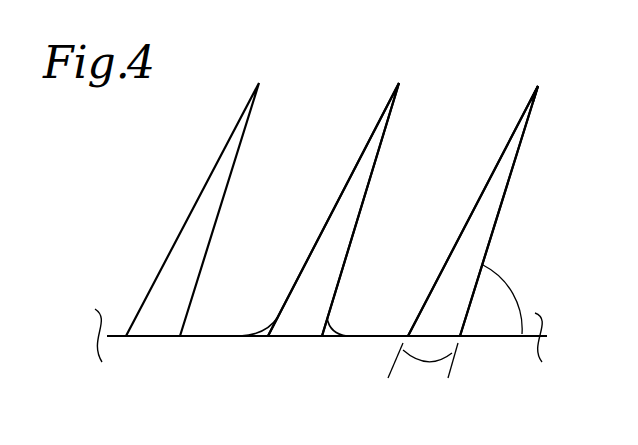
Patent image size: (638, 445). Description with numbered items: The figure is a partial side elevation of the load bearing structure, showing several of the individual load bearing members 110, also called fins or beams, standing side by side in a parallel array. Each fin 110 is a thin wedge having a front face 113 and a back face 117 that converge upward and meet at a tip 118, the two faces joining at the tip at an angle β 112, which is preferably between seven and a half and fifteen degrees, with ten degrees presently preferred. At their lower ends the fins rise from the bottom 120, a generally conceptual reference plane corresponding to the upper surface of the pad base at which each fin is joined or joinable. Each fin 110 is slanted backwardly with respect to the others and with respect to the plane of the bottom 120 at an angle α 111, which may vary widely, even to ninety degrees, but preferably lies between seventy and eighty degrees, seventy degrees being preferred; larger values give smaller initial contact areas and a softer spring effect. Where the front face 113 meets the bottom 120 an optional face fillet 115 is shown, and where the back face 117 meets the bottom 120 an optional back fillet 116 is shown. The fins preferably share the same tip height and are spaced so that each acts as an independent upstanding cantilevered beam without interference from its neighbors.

The load bearing members 110 is at (320, 195).
The angle α 111 is at (526, 293).
The angle β 112 is at (423, 372).
The front face 113 is at (506, 147).
The face fillet 115 is at (267, 325).
The back fillet 116 is at (332, 326).
The back face 117 is at (368, 186).
The tip 118 is at (539, 86).
The bottom 120 is at (288, 351).